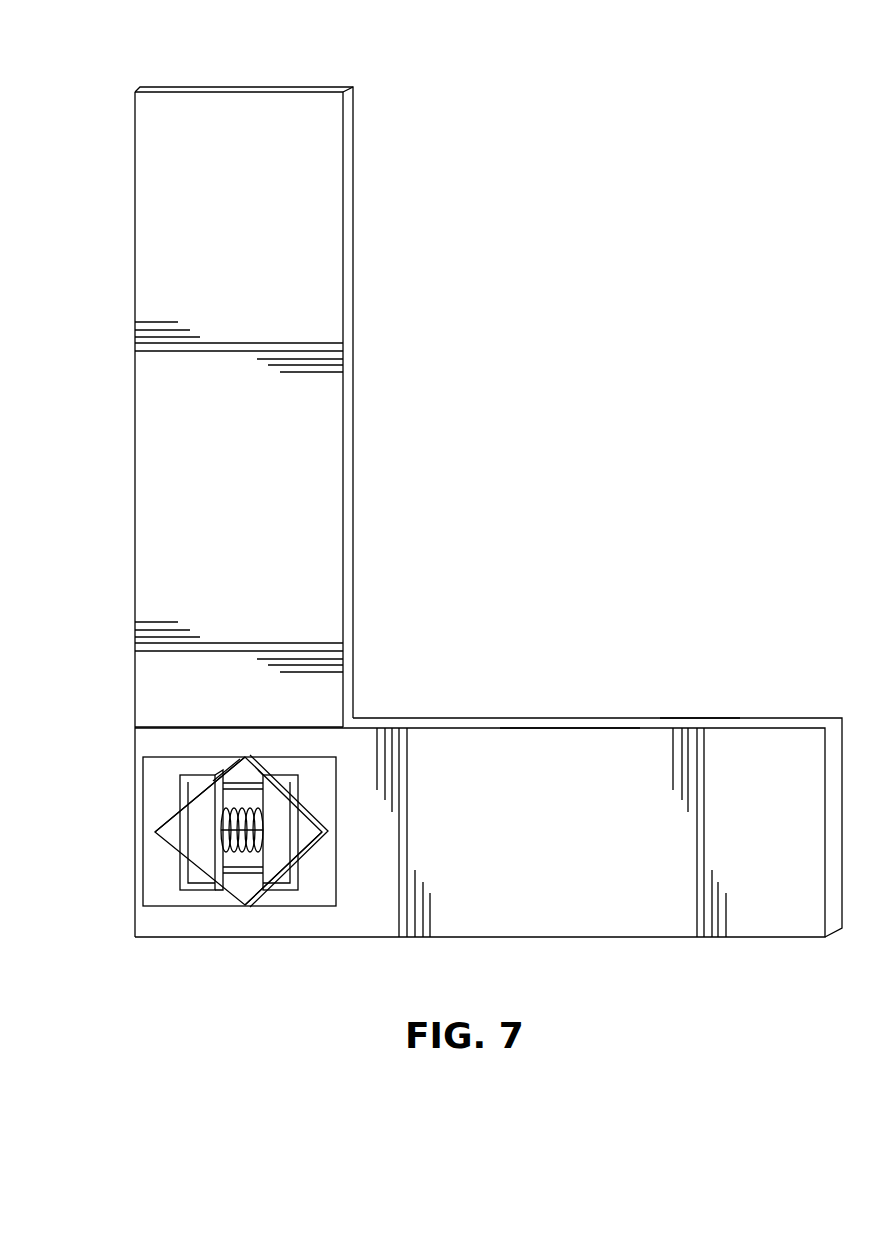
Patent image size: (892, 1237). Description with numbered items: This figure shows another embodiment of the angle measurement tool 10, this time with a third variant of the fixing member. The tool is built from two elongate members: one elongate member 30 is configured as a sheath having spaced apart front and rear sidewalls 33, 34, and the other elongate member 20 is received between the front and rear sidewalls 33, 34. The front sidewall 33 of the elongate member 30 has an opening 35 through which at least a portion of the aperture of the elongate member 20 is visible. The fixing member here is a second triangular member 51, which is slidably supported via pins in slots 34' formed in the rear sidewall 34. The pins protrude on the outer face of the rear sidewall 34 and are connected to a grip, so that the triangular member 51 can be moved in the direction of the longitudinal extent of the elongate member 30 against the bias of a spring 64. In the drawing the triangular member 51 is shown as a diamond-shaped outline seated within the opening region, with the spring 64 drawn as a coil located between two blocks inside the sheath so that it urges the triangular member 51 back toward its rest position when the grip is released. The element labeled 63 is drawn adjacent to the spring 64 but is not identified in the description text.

The measurement tool 10 is at (158, 50).
The elongate member 20 is at (345, 370).
The elongate member 30 is at (512, 668).
The front sidewall 33 is at (567, 742).
The rear sidewall 34 is at (700, 687).
The slots 34' is at (189, 857).
The opening 35 is at (338, 897).
The second triangular member 51 is at (193, 833).
The spring 63 is at (260, 887).
The spring 64 is at (228, 880).